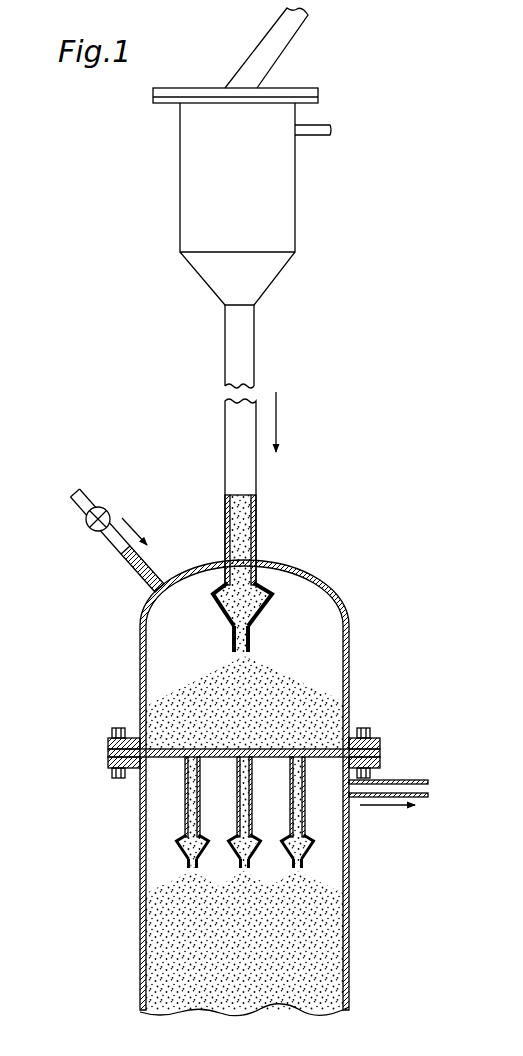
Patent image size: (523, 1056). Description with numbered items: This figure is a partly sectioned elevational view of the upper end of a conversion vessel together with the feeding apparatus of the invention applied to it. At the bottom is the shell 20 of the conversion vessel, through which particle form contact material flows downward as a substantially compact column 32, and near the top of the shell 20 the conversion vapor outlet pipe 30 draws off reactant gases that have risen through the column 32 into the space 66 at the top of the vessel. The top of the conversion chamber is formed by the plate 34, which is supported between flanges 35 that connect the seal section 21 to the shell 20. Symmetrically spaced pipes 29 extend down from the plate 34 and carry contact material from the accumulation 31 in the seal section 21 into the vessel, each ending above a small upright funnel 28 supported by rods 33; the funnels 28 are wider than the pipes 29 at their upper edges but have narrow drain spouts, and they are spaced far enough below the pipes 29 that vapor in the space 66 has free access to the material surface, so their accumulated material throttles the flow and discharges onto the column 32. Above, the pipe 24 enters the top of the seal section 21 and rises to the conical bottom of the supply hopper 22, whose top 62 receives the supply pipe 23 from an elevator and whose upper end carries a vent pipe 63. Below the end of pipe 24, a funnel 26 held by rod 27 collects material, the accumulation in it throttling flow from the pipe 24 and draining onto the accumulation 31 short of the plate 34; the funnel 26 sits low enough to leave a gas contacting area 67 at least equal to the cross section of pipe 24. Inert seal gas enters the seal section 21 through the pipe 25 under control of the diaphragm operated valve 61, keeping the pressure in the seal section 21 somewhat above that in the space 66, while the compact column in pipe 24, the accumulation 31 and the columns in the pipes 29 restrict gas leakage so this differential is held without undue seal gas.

The shell of conversion vessel 20 is at (141, 892).
The seal section 21 is at (139, 663).
The supply hopper 22 is at (180, 179).
The supply pipe 23 is at (256, 51).
The pipe 24 is at (256, 361).
The pipe 25 is at (137, 581).
The funnel 26 is at (256, 638).
The rod 27 is at (270, 581).
The funnel 28 is at (303, 862).
The pipes 29 is at (188, 801).
The conversion vapor outlet pipe 30 is at (429, 789).
The accumulation of contact material 31 is at (305, 688).
The compact column of contact material 32 is at (322, 937).
The rods 33 is at (306, 833).
The plate 34 is at (342, 746).
The flanges 35 is at (382, 758).
The valve 61 is at (91, 536).
The top of hopper 62 is at (190, 88).
The vent pipe 63 is at (318, 126).
The space 66 is at (157, 848).
The gas contacting area 67 is at (221, 581).